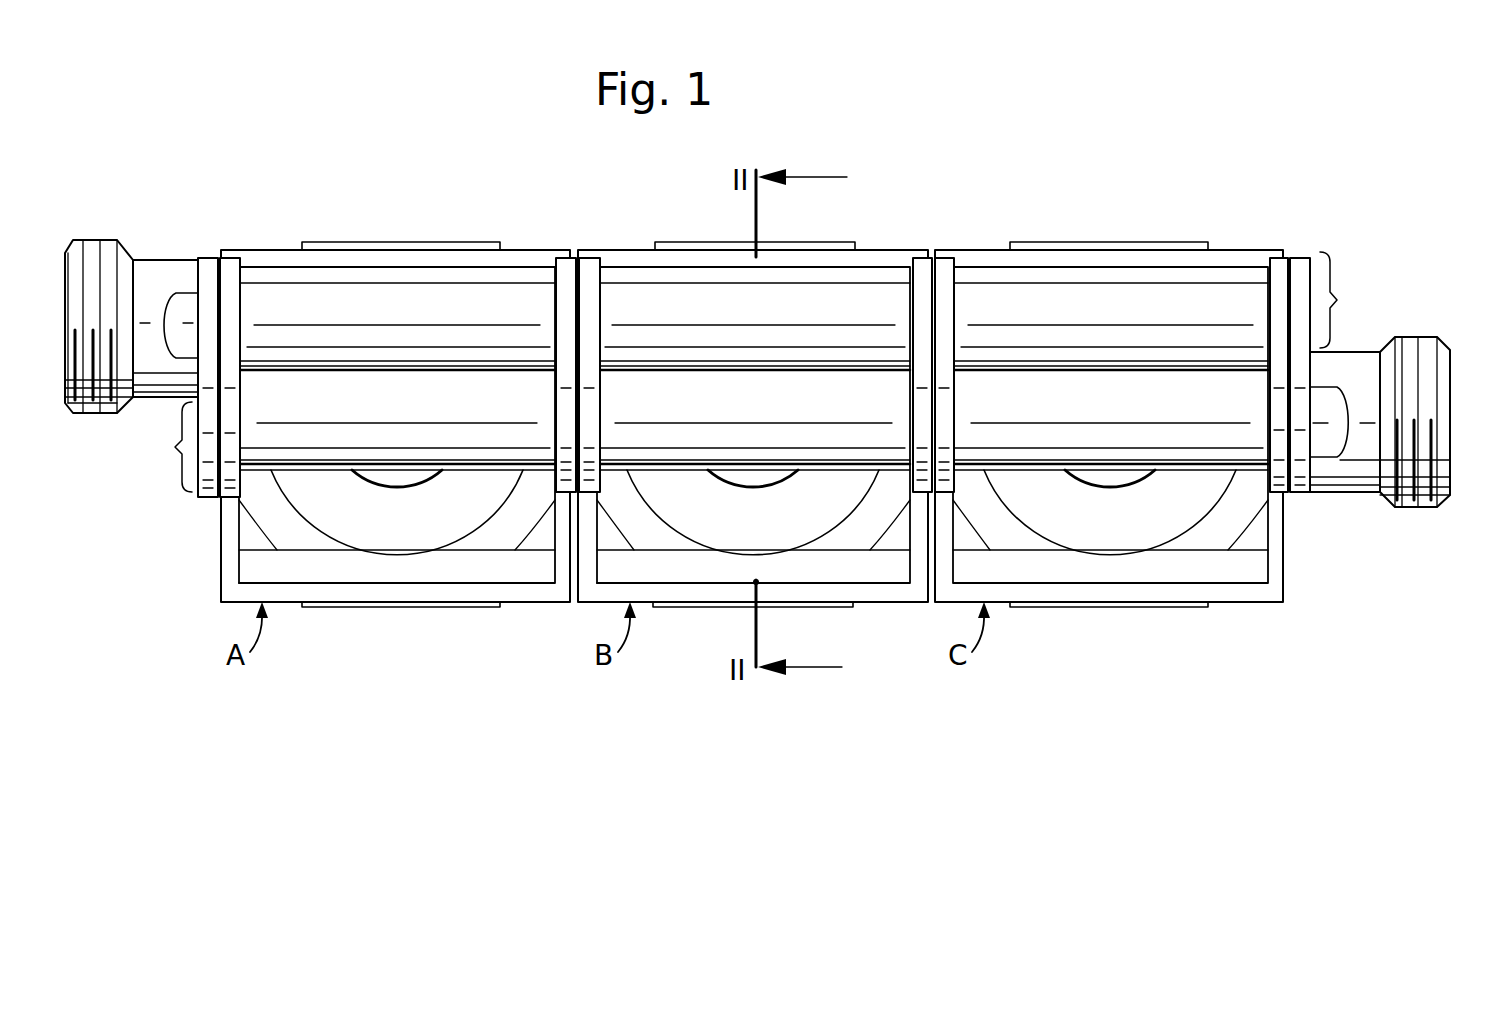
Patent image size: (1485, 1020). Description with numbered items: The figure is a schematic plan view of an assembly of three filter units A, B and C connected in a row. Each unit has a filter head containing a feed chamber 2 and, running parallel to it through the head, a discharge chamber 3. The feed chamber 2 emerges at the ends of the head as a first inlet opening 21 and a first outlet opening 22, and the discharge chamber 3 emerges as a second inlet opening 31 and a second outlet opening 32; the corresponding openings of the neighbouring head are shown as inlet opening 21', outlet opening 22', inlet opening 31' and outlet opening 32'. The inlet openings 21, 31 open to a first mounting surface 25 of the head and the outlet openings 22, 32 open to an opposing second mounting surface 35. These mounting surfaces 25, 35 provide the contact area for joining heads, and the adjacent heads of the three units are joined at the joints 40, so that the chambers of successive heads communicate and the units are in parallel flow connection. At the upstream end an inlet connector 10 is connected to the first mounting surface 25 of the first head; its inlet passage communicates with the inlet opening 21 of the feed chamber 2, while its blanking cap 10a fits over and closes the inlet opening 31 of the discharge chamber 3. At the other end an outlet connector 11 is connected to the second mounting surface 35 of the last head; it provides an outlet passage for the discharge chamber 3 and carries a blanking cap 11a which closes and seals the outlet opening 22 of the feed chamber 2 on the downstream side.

The feed chamber 2 is at (1035, 300).
The discharge chamber 3 is at (1130, 400).
The inlet connector 10 is at (93, 263).
The blanking cap 10a is at (162, 447).
The outlet connector 11 is at (1422, 508).
The blanking cap 11a is at (1332, 372).
The first inlet opening 21 is at (395, 404).
The first inlet opening 21' is at (753, 403).
The first outlet opening 22 is at (397, 392).
The first outlet opening 22' is at (755, 391).
The first mounting surface 25 is at (212, 286).
The second inlet opening 31 is at (318, 487).
The second inlet opening 31' is at (675, 487).
The second outlet opening 32 is at (476, 487).
The second outlet opening 32' is at (832, 487).
The second mounting surface 35 is at (580, 286).
The joint 40 is at (579, 255).